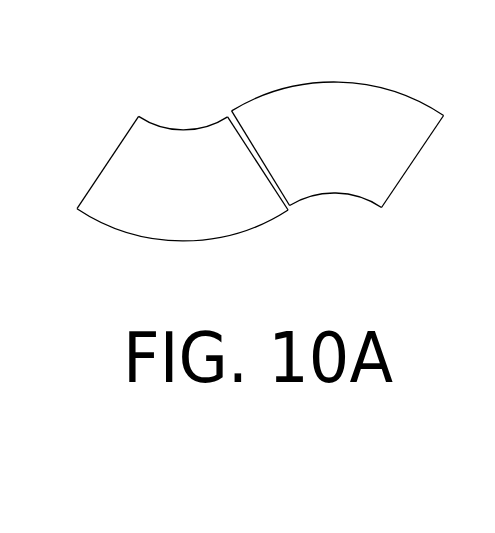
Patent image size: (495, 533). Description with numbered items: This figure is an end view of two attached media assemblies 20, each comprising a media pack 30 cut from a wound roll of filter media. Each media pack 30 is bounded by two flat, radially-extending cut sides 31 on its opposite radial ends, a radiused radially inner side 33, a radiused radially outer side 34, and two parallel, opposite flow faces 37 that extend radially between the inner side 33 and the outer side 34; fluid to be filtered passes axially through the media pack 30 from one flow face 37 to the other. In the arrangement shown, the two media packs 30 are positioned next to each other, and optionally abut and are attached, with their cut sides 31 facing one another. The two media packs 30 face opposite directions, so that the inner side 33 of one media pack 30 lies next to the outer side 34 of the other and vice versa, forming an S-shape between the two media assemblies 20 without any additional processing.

The media assembly 20 is at (121, 240).
The media pack 30 is at (120, 143).
The cut side 31 is at (97, 178).
The inner side 33 is at (182, 128).
The outer side 34 is at (180, 241).
The flow face 37 is at (238, 222).